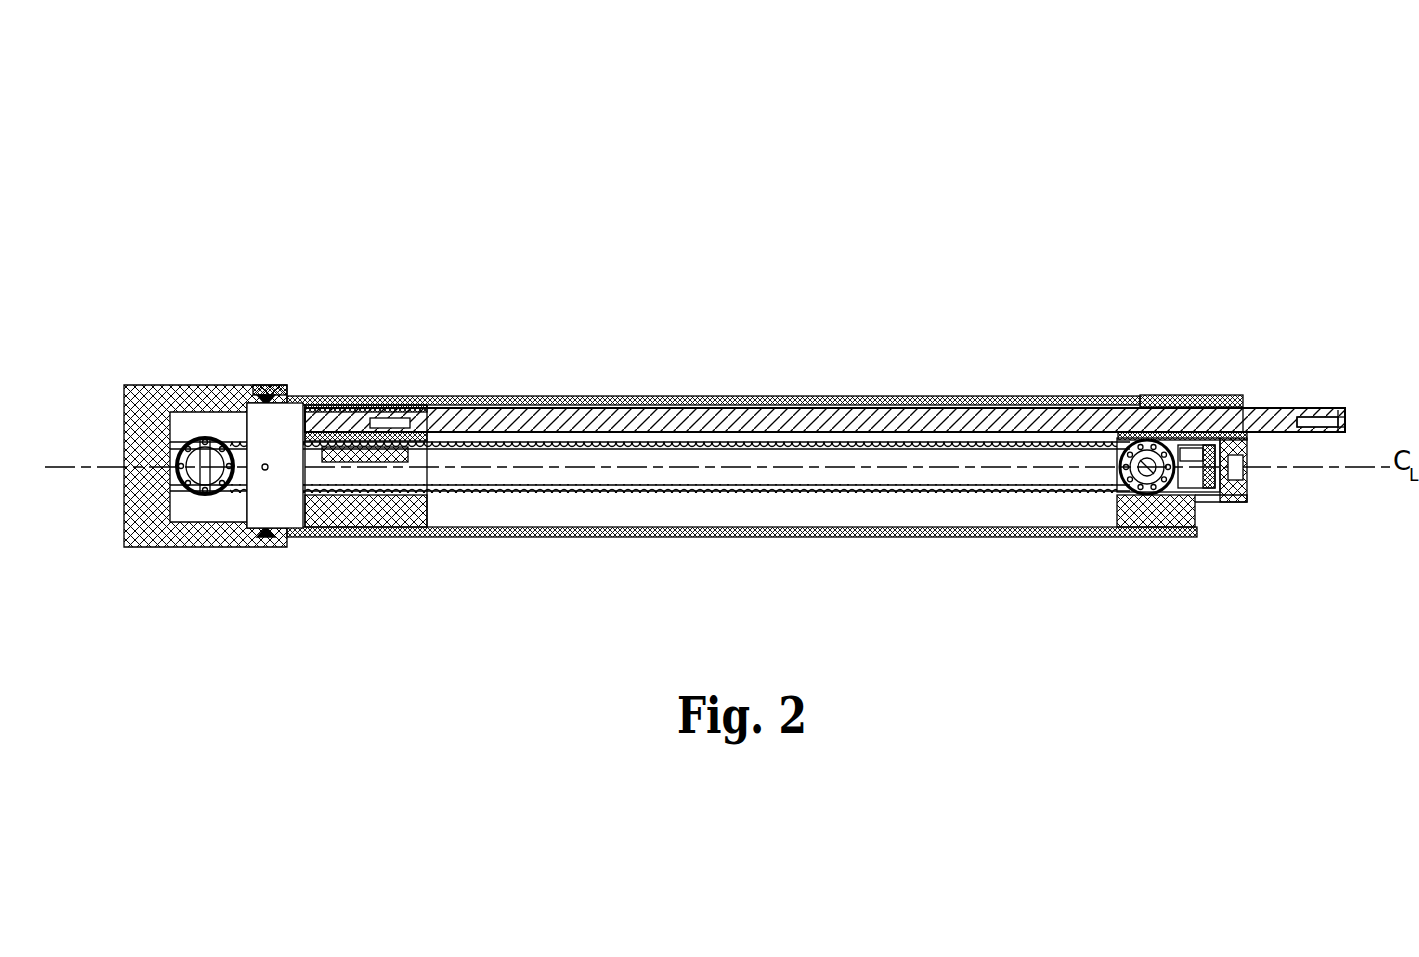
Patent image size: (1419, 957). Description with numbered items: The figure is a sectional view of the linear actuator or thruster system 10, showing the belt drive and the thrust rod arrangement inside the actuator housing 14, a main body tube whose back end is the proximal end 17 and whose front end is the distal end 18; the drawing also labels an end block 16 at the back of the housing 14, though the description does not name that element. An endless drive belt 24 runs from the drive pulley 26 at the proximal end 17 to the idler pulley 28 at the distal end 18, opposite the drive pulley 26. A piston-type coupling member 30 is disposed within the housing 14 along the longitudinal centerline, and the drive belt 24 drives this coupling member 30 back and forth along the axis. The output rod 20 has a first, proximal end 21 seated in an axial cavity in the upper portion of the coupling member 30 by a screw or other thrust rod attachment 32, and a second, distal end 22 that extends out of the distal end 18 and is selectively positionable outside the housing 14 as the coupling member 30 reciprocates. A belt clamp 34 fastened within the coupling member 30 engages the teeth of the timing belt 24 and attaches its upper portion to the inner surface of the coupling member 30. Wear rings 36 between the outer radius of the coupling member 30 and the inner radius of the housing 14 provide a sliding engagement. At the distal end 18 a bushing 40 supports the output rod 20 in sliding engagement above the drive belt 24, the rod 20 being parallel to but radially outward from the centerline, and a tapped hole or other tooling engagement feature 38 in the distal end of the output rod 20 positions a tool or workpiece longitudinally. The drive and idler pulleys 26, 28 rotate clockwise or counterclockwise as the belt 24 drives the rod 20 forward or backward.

The linear actuator system 10 is at (754, 353).
The actuator housing 14 is at (791, 540).
The end block 16 is at (207, 385).
The proximal end 17 is at (517, 438).
The distal end 18 is at (1146, 450).
The output rod 20 is at (656, 416).
The first end of output rod 21 is at (444, 448).
The second end of output rod 22 is at (1341, 408).
The drive belt 24 is at (265, 490).
The drive pulley 26 is at (200, 496).
The idler pulley 28 is at (1170, 538).
The coupling member 30 is at (370, 540).
The thrust rod attachment 32 is at (392, 405).
The belt clamp 34 is at (403, 495).
The wear rings 36 is at (327, 396).
The tooling engagement feature 38 is at (1335, 434).
The bushing 40 is at (1177, 396).